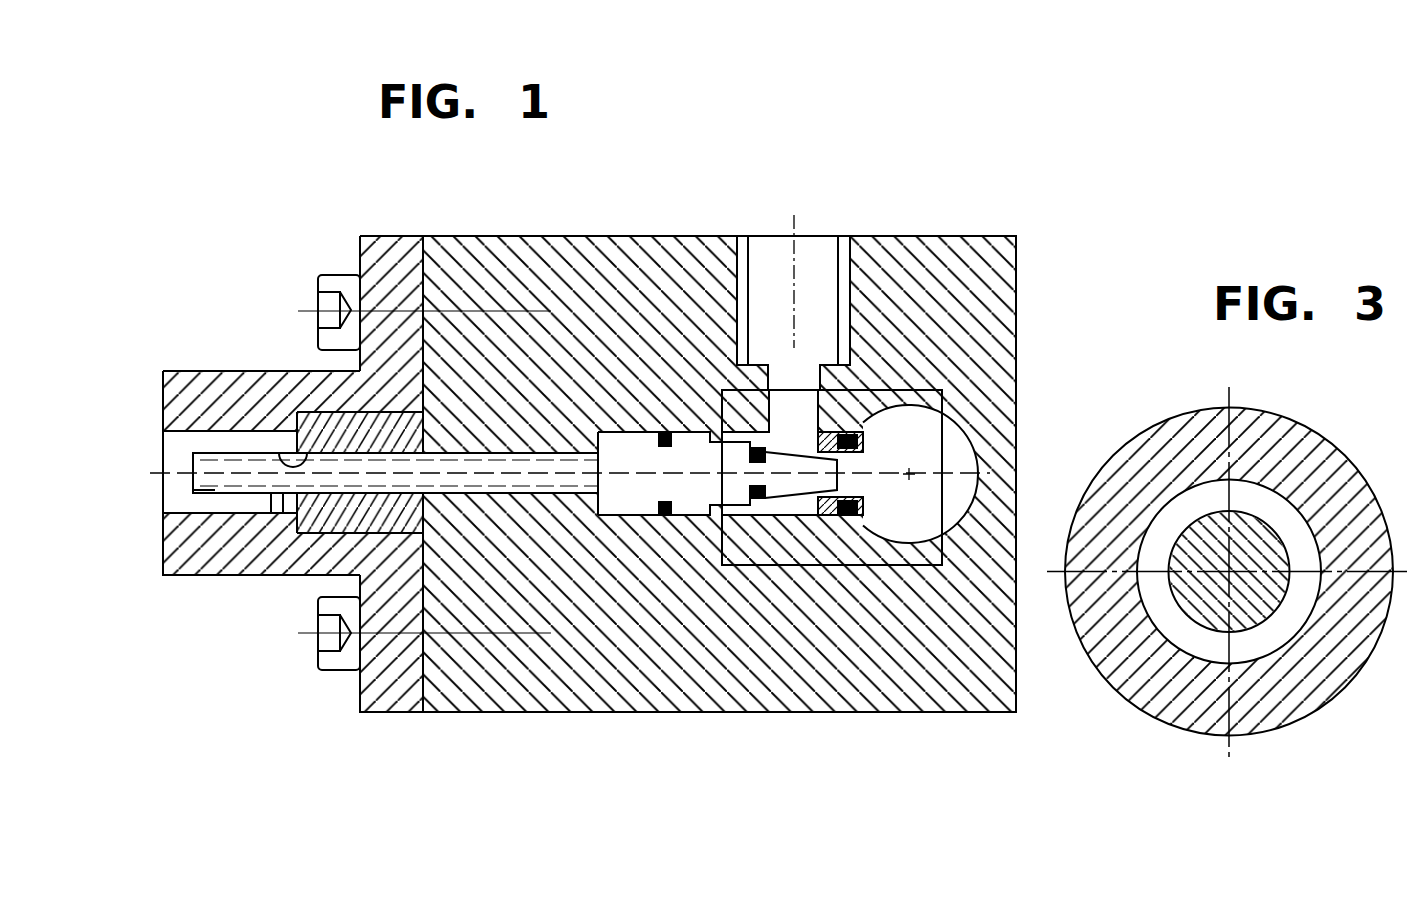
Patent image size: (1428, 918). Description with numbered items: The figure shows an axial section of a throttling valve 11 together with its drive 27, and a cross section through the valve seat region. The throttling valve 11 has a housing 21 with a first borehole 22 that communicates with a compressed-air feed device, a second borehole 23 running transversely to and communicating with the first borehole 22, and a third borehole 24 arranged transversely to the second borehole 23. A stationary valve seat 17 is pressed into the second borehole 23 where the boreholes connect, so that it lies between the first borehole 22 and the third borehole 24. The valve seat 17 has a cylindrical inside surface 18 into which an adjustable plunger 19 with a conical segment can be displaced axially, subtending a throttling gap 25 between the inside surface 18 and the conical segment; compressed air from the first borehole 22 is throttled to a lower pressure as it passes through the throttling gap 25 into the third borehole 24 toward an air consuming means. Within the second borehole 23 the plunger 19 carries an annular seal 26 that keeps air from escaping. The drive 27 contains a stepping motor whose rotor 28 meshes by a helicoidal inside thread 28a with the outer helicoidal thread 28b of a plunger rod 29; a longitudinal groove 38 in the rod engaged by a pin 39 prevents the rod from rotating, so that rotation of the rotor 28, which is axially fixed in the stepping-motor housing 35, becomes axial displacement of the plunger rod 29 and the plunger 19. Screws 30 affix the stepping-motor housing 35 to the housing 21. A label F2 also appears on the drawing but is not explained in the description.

In FIG. 1, the throttling valve 11 is at (1012, 206).
In FIG. 1, the valve seat 17 is at (868, 447).
In FIG. 3, the valve seat 17 is at (1288, 705).
In FIG. 1, the cylindrical inside surface 18 is at (863, 485).
In FIG. 1, the plunger 19 is at (808, 465).
In FIG. 3, the plunger 19 is at (1197, 595).
In FIG. 1, the housing 21 is at (568, 250).
In FIG. 1, the first borehole 22 is at (955, 460).
In FIG. 1, the second borehole 23 is at (552, 437).
In FIG. 1, the third borehole 24 is at (802, 378).
In FIG. 3, the throttling gap 25 is at (1303, 610).
In FIG. 1, the annular seal 26 is at (657, 500).
In FIG. 1, the drive 27 is at (236, 658).
In FIG. 1, the rotor 28 is at (338, 430).
In FIG. 1, the helicoidal inside thread 28a is at (285, 462).
In FIG. 1, the outer helicoidal thread 28b is at (205, 457).
In FIG. 1, the plunger rod 29 is at (233, 453).
In FIG. 1, the screws 30 is at (347, 283).
In FIG. 1, the stepping-motor housing 35 is at (397, 690).
In FIG. 1, the longitudinal groove 38 is at (200, 489).
In FIG. 1, the pin 39 is at (268, 502).
In FIG. 1, the force F2 is at (878, 390).